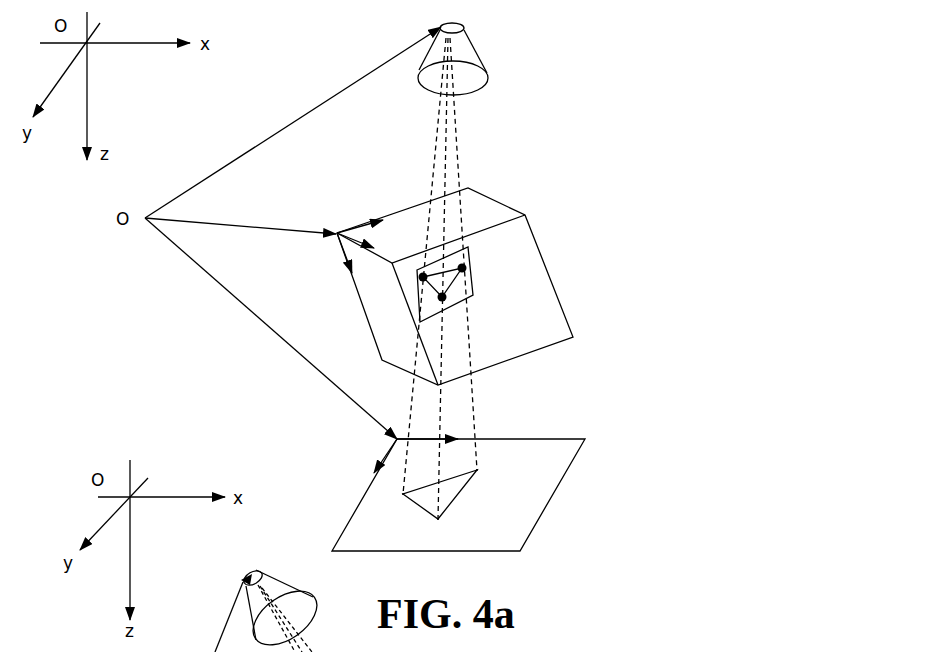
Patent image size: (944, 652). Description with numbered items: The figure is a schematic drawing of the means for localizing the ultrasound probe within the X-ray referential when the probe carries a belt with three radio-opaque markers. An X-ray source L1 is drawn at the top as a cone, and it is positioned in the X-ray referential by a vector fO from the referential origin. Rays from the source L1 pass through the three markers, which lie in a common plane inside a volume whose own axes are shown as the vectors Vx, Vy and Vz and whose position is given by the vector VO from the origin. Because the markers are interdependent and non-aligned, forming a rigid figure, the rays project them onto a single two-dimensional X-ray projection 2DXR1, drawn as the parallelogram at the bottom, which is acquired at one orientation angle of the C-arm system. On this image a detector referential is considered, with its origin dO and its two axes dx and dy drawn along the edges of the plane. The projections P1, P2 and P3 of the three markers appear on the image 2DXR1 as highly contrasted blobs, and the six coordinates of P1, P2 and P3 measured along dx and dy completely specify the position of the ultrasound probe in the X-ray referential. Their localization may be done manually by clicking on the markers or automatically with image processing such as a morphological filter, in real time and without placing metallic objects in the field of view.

The X-ray source (focal spot cone) L1 is at (462, 85).
The 2D X-ray projection 2DXR1 is at (532, 525).
The projection of first marker P1 is at (492, 473).
The projection of second marker P2 is at (453, 524).
The projection of third marker P3 is at (386, 511).
The vector from origin to X-ray source fO is at (293, 122).
The detector referential origin dO is at (271, 328).
The vector from origin to volume origin VO is at (240, 216).
The volume x axis vector Vx is at (332, 258).
The volume y axis vector Vy is at (360, 214).
The volume z axis vector Vz is at (358, 262).
The detector referential x axis dx is at (427, 427).
The detector referential y axis dy is at (367, 456).